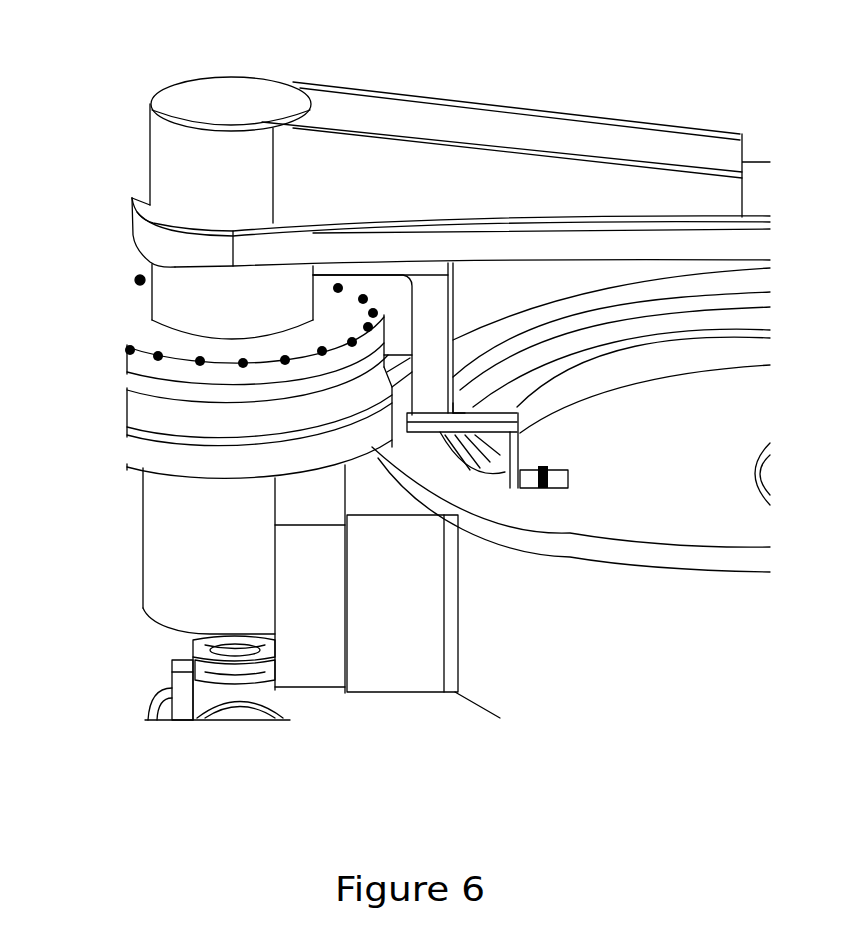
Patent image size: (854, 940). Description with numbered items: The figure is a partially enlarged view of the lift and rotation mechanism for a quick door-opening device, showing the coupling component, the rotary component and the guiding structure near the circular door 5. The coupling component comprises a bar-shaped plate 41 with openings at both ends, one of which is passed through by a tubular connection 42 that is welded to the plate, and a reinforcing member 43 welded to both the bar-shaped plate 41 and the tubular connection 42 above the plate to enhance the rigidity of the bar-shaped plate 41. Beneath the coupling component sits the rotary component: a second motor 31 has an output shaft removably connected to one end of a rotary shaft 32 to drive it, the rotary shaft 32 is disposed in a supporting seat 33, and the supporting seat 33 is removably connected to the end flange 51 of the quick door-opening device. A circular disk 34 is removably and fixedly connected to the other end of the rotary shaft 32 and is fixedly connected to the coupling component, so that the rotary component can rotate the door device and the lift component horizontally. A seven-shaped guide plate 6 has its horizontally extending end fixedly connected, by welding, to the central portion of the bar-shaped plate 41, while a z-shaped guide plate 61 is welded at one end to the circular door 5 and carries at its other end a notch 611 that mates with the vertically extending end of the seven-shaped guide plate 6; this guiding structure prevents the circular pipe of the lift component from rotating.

The circular door 5 is at (677, 503).
The end flange 51 is at (573, 532).
The 7-shaped guide plate 6 is at (435, 306).
The z-shaped guide plate 61 is at (513, 457).
The notch 611 is at (458, 407).
The bar-shaped plate 41 is at (133, 235).
The tubular connection 42 is at (167, 150).
The reinforcing member 43 is at (453, 127).
The second motor 31 is at (167, 657).
The rotary shaft 32 is at (135, 382).
The supporting seat 33 is at (167, 560).
The circular disk 34 is at (143, 417).